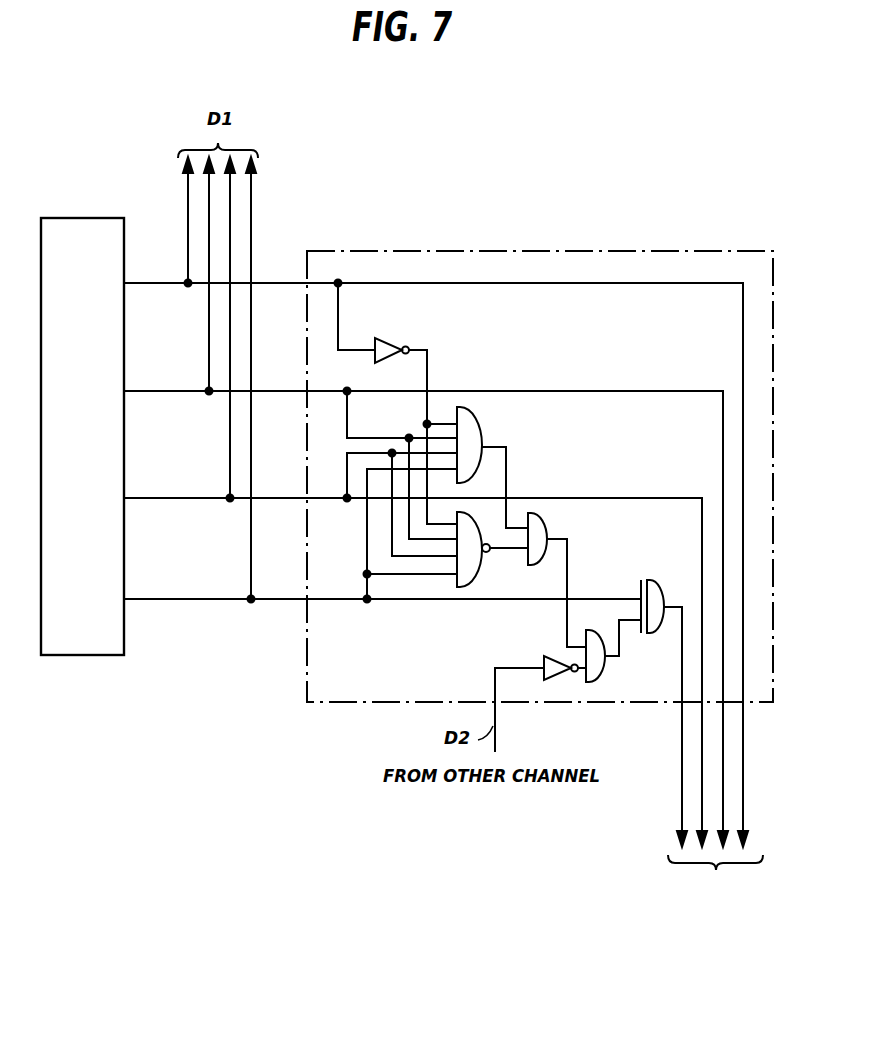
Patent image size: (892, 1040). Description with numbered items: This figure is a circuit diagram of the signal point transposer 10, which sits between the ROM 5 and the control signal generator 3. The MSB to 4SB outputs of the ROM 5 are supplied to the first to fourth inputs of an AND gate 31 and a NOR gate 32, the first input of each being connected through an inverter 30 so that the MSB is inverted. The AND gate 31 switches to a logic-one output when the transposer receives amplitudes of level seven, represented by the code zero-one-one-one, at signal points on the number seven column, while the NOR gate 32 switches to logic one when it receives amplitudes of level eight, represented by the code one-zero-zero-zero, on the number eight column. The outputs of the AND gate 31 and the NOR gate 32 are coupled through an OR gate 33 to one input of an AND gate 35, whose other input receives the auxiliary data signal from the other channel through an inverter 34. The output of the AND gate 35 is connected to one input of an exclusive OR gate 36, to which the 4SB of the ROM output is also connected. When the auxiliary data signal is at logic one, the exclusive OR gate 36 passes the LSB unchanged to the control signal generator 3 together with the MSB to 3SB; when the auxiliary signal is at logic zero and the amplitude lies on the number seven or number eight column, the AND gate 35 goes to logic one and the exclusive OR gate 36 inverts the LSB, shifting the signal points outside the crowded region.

The ROM 5 is at (60, 222).
The signal point transposer 10 is at (387, 252).
The inverter 30 is at (390, 338).
The AND gate 31 is at (481, 433).
The NOR gate 32 is at (474, 577).
The OR gate 33 is at (545, 533).
The inverter 34 is at (543, 656).
The AND gate 35 is at (600, 675).
The exclusive OR gate 36 is at (658, 582).
The control signal generator 3 is at (713, 883).